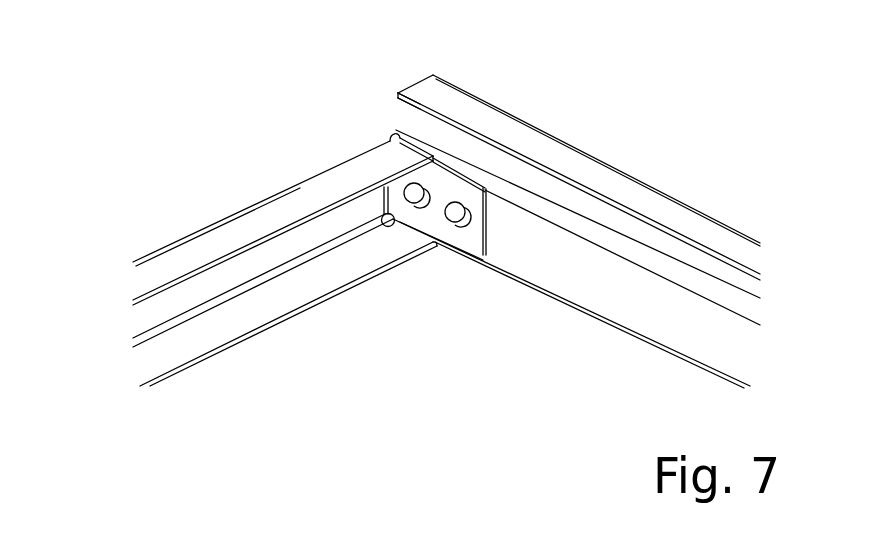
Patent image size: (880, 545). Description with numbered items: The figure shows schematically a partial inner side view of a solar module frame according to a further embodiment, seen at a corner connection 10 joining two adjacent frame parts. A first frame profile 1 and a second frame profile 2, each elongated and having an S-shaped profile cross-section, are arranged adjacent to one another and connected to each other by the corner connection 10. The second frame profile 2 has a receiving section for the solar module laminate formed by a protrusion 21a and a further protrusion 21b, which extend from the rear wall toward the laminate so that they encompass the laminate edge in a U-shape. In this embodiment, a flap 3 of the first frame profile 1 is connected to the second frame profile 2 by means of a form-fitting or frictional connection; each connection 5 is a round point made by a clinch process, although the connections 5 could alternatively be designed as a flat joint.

The first frame profile 1 is at (160, 248).
The second frame profile 2 is at (622, 176).
The flap 3 is at (473, 246).
The connection 5 is at (416, 196).
The corner connection 10 is at (379, 115).
The protrusion 21a is at (467, 103).
The further protrusion 21b is at (415, 118).